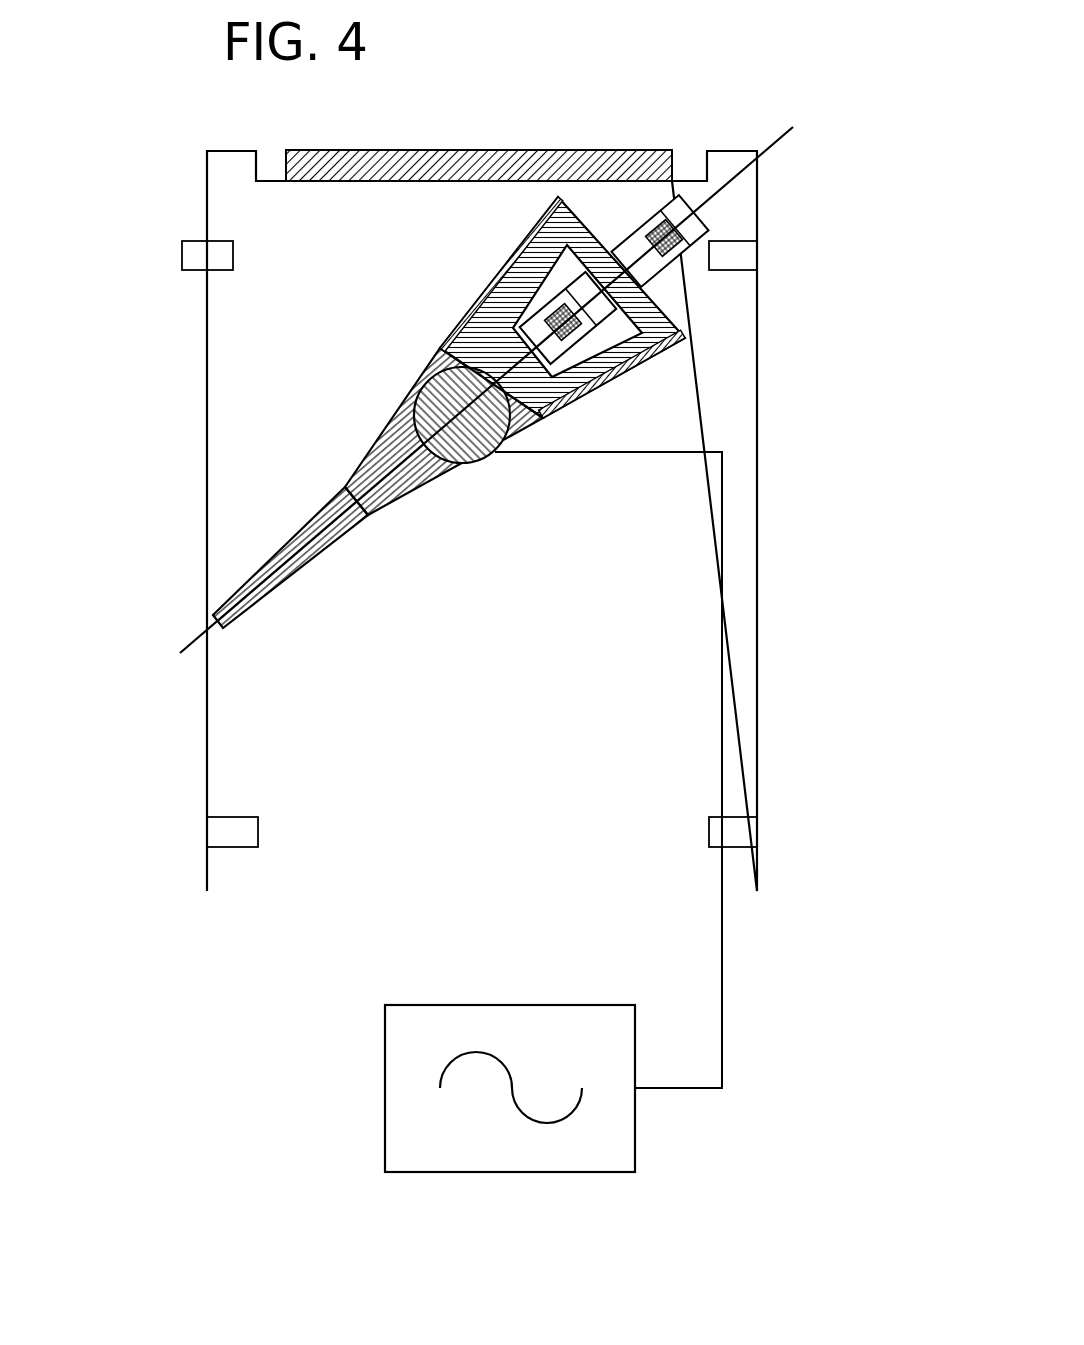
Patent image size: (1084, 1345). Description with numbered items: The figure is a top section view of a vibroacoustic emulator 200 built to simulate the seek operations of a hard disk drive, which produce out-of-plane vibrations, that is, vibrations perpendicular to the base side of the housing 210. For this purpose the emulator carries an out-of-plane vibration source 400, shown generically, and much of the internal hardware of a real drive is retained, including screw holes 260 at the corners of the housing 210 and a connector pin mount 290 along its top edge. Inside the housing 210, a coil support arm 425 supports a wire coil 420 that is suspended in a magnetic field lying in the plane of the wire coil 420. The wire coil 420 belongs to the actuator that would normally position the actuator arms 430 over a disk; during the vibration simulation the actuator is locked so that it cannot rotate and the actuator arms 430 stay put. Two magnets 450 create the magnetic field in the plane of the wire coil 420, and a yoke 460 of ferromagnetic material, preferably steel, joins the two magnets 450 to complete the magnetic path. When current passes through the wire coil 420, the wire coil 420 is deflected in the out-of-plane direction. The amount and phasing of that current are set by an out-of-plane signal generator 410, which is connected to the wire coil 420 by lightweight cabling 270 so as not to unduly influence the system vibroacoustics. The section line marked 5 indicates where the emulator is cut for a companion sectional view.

The section line for FIG. 5 is at (157, 622).
The vibroacoustic emulator 200 is at (492, 621).
The housing 210 is at (363, 891).
The screw holes 260 is at (207, 240).
The electrical lead 270 is at (723, 1040).
The connector pin mount 290 is at (327, 150).
The out-of-plane vibration source 400 is at (498, 671).
The out-of-plane signal generator 410 is at (610, 1172).
The wire coil 420 is at (685, 338).
The coil support arm 425 is at (625, 375).
The actuator arms 430 is at (287, 543).
The magnets 450 is at (552, 317).
The yoke 460 is at (512, 330).